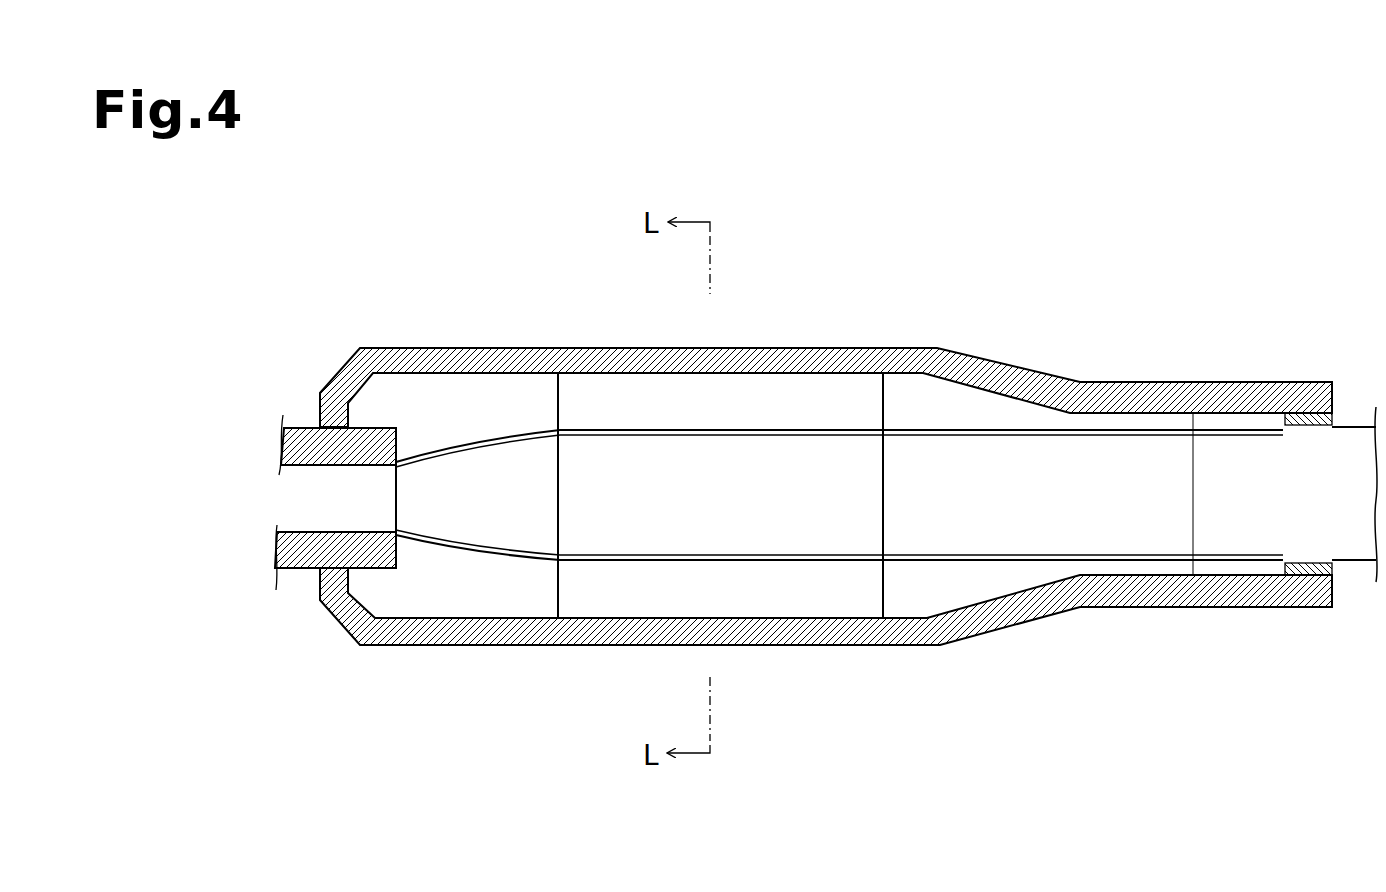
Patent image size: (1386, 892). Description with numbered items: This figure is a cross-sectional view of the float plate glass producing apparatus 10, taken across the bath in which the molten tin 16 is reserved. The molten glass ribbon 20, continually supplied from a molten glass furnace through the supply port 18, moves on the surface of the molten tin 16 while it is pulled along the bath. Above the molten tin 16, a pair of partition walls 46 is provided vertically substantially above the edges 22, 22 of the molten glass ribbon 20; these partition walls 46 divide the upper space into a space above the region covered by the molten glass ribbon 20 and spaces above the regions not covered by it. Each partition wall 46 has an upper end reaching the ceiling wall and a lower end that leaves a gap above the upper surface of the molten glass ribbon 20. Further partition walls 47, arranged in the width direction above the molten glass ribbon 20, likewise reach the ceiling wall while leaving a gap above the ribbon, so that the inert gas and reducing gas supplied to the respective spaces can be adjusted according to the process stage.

The float plate glass producing apparatus 10 is at (1237, 333).
The molten tin 16 is at (953, 588).
The supply port 18 is at (335, 528).
The molten glass ribbon 20 is at (1222, 505).
The edges 22 is at (638, 430).
The partition walls 46 is at (593, 430).
The partition walls 47 is at (553, 398).